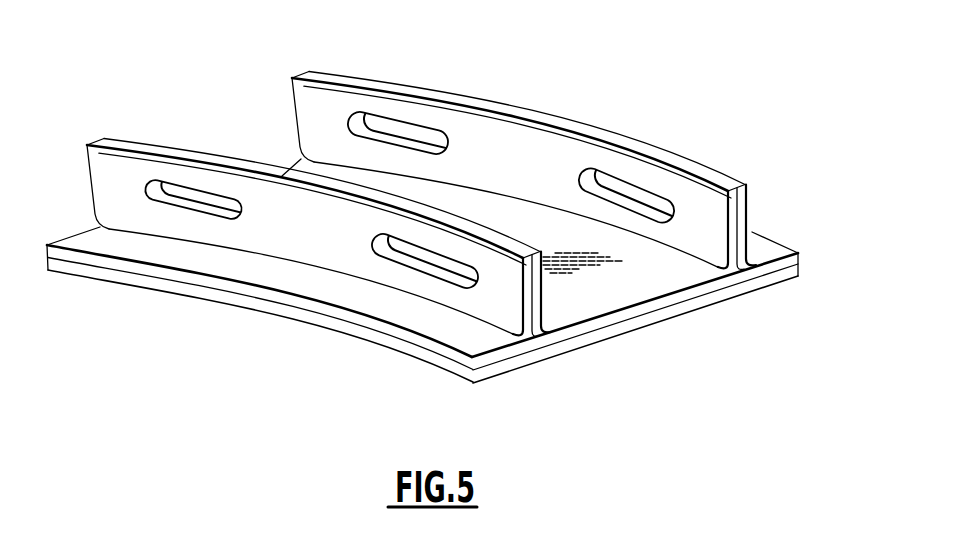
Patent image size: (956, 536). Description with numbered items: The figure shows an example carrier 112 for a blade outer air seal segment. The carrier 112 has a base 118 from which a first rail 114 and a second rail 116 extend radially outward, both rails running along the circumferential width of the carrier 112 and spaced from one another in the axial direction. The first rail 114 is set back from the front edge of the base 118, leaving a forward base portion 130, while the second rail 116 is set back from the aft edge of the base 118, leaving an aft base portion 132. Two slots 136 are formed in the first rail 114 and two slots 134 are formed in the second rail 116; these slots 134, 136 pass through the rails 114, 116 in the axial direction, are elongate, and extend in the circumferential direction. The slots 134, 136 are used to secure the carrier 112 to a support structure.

The carrier 112 is at (684, 70).
The first rail 114 is at (118, 141).
The second rail 116 is at (323, 76).
The base 118 is at (607, 300).
The forward base portion 130 is at (490, 371).
The aft base portion 132 is at (775, 280).
The slots 134 is at (403, 141).
The slots 136 is at (212, 208).